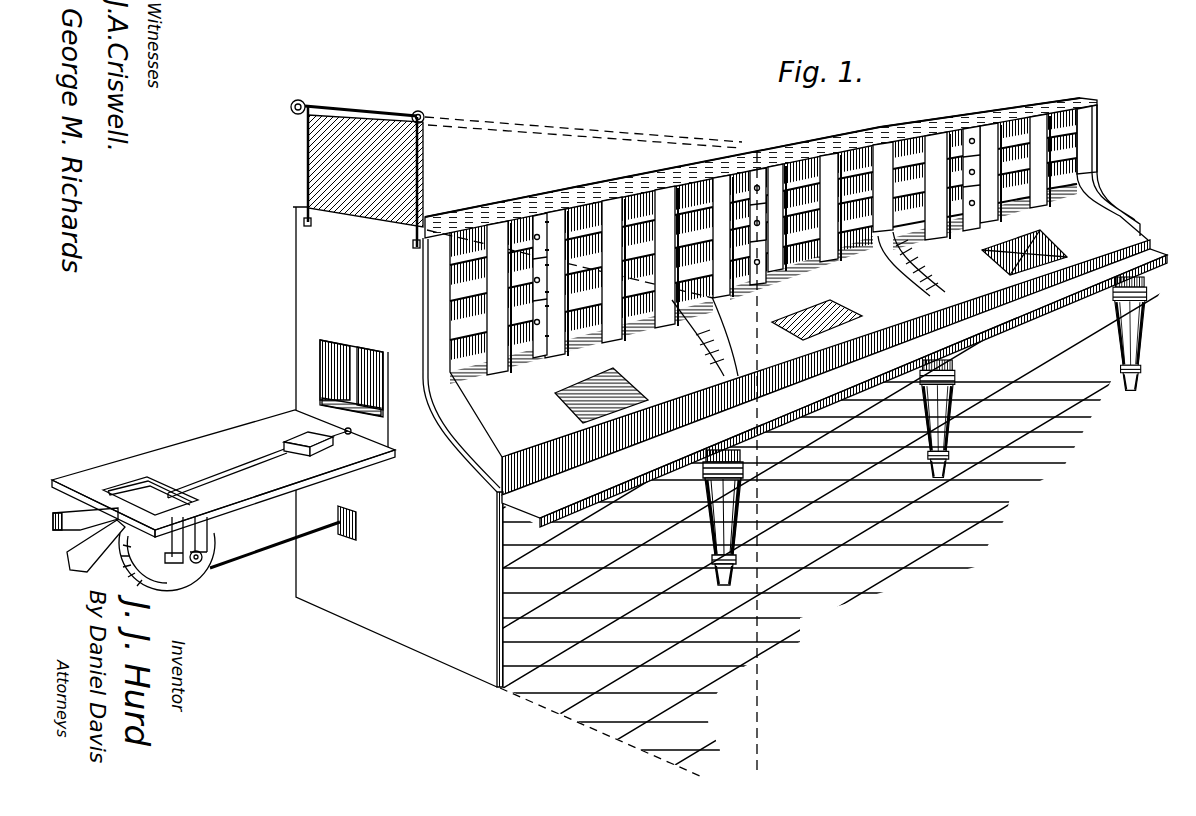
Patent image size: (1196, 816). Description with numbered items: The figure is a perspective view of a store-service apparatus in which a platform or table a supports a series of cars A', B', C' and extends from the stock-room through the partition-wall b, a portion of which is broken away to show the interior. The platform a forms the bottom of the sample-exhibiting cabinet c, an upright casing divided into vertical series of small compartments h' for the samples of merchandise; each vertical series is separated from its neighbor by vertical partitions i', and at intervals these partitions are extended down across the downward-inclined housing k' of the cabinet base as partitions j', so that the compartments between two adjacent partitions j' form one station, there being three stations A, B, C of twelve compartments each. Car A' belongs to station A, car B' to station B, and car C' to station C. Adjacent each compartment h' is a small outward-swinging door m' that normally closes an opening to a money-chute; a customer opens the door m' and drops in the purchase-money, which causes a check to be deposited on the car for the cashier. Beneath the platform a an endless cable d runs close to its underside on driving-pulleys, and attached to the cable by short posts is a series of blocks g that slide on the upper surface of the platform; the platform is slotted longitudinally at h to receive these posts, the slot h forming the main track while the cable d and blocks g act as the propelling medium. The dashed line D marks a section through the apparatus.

The platform a is at (220, 434).
The partition-wall b is at (496, 491).
The sample-exhibiting cabinet c is at (761, 168).
The endless cable d is at (157, 602).
The blocks g is at (312, 433).
The longitudinal slot h is at (258, 464).
The compartments h' is at (779, 236).
The vertical partitions i' is at (784, 260).
The extended partitions j' is at (785, 298).
The downward-inclined housing k' is at (745, 342).
The outward-swinging door m' is at (755, 231).
The delivery-station A is at (579, 406).
The car A' is at (354, 386).
The delivery-station B is at (737, 326).
The car B' is at (817, 306).
The delivery-station C is at (1073, 226).
The car C' is at (1024, 241).
The section line D is at (750, 456).